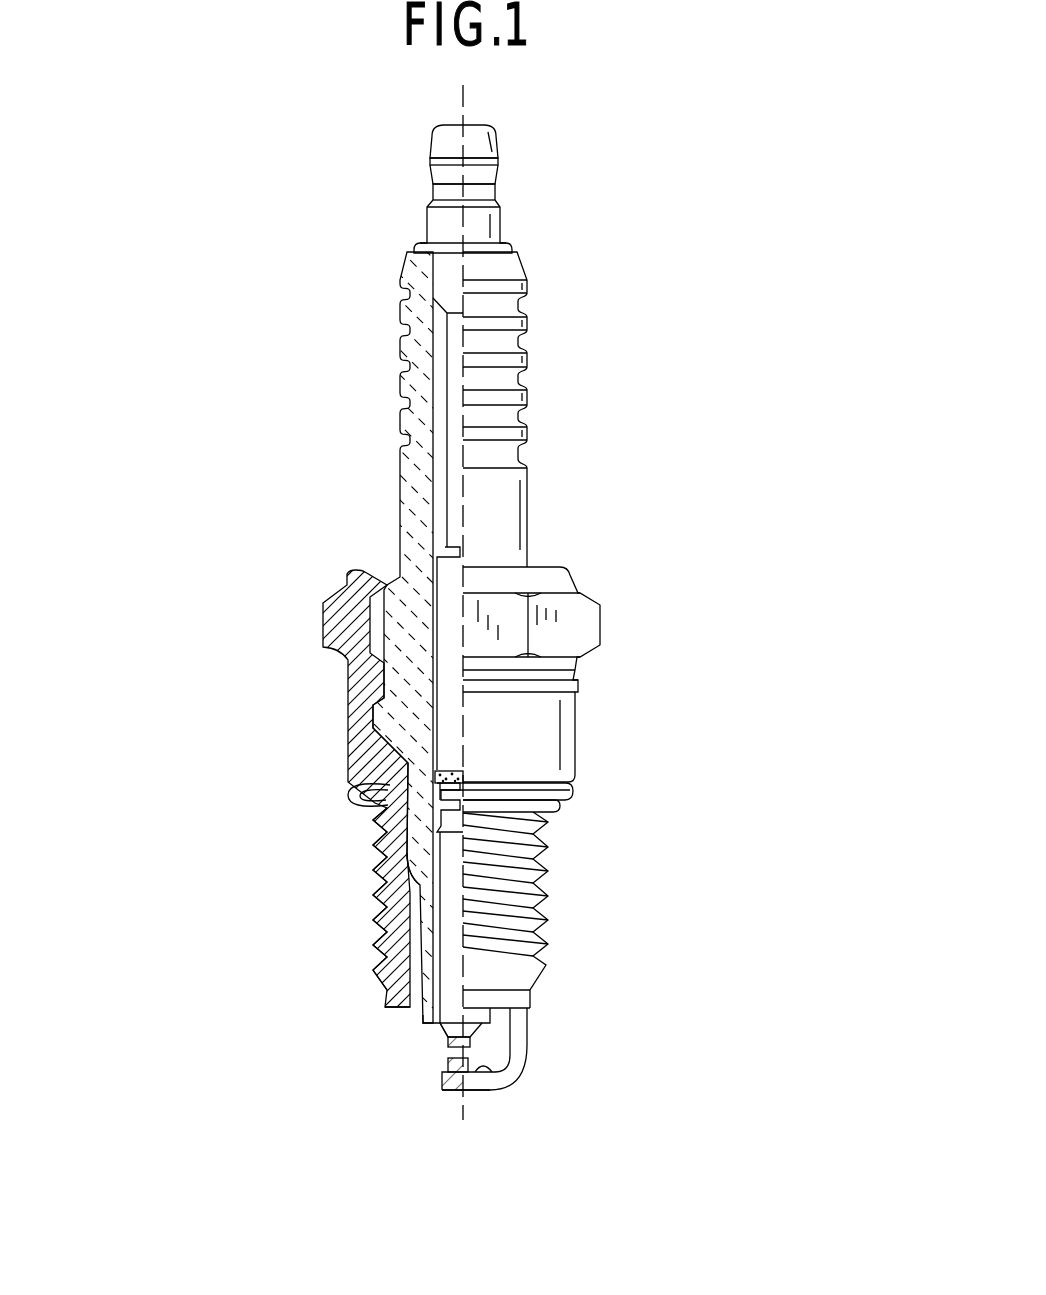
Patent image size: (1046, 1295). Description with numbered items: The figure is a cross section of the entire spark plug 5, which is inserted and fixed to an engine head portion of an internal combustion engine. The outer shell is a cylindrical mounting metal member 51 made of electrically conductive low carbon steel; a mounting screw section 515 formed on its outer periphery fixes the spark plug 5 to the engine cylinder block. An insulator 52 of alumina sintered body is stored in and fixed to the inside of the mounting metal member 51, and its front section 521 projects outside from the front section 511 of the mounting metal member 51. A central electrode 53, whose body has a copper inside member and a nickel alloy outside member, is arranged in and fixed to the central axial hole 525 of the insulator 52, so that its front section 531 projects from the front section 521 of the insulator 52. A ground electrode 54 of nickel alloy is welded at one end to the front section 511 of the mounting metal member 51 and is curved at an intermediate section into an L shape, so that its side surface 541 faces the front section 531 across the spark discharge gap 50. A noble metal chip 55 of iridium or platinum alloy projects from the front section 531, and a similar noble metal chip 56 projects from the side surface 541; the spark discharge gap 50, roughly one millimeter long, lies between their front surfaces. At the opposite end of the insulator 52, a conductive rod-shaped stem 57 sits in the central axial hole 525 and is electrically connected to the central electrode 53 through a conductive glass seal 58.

The spark plug 5 is at (580, 233).
The spark discharge gap 50 is at (465, 1053).
The mounting metal member 51 is at (358, 673).
The front section of the mounting metal member 511 is at (395, 1008).
The mounting screw section 515 is at (512, 877).
The insulator 52 is at (399, 492).
The front section of the insulator 521 is at (420, 1019).
The central axial hole 525 is at (415, 884).
The central electrode 53 is at (450, 944).
The front section of the central electrode 531 is at (442, 1033).
The ground electrode 54 is at (527, 1042).
The side surface of the ground electrode 541 is at (490, 1082).
The noble metal chip 55 is at (447, 1047).
The noble metal chip 56 is at (443, 1070).
The stem 57 is at (450, 363).
The glass seal 58 is at (437, 777).